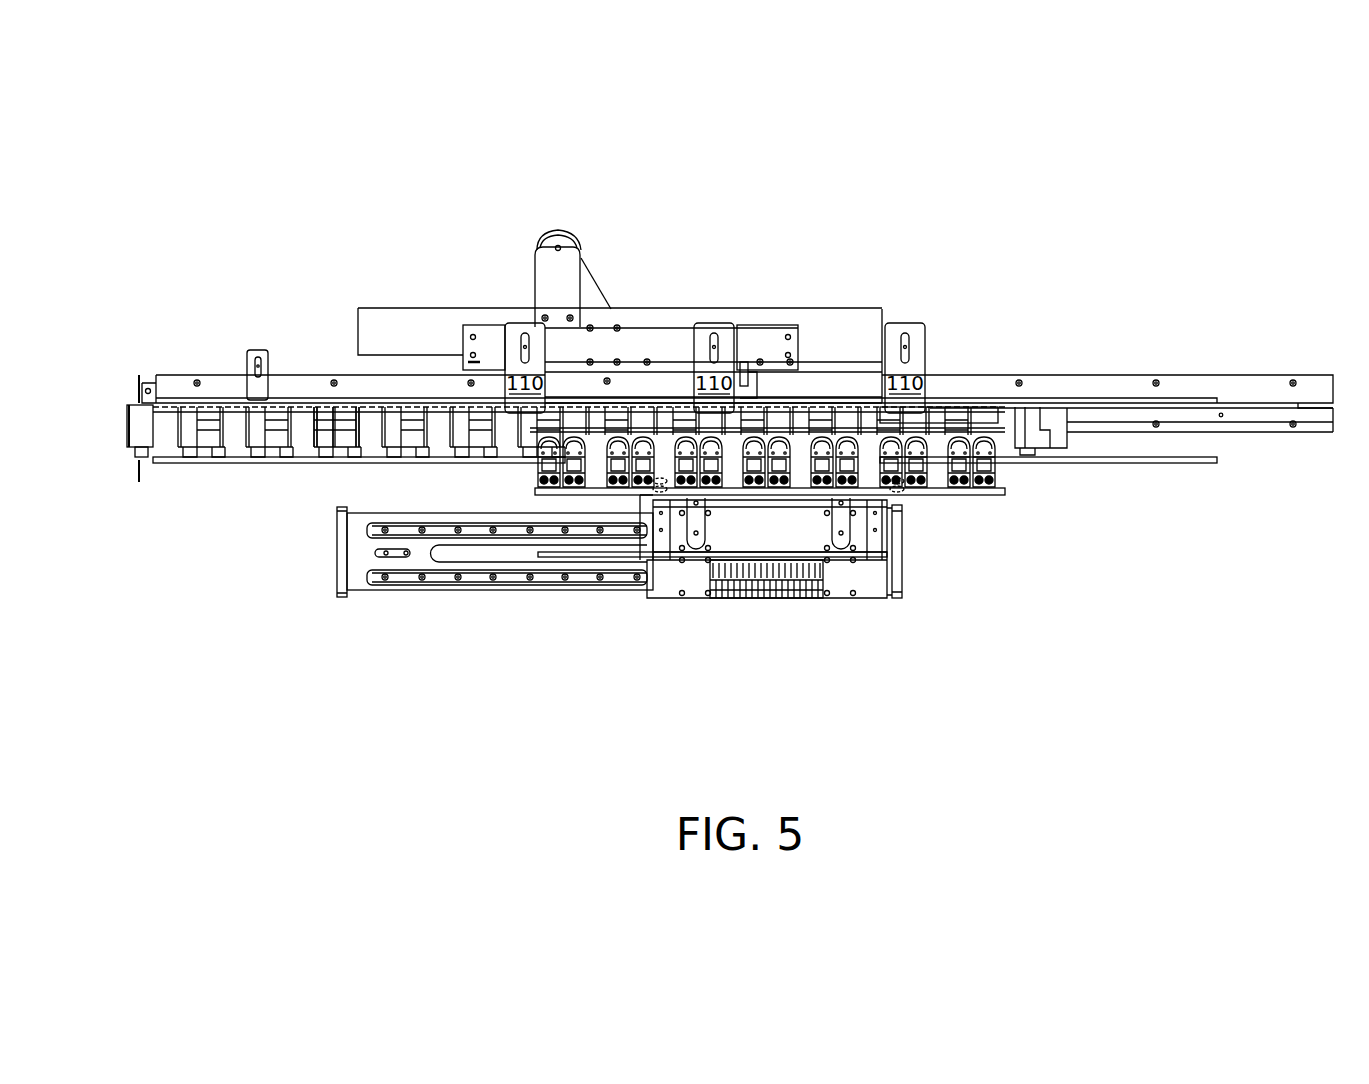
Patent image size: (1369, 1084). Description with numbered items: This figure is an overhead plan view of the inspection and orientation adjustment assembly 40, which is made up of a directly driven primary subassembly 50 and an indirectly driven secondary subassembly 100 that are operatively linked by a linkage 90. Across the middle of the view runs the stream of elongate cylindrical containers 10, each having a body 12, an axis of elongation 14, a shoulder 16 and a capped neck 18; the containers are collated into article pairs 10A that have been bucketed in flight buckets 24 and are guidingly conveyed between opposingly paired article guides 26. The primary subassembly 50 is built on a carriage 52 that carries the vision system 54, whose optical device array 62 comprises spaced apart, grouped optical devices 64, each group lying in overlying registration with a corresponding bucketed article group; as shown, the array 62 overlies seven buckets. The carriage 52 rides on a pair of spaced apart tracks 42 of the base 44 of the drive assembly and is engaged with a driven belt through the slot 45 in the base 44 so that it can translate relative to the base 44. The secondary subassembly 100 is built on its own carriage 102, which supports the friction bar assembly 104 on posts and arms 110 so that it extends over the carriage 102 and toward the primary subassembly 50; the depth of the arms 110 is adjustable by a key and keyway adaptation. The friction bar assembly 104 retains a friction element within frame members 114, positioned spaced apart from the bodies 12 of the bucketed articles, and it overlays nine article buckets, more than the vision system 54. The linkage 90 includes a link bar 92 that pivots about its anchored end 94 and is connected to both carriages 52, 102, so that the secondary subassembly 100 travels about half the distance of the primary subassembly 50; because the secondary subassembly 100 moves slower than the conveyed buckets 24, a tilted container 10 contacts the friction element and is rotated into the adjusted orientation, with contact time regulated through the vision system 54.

The cylindrical container 10 is at (204, 430).
The article pair 10A is at (354, 454).
The body 12 is at (130, 435).
The axis of elongation 14 is at (139, 389).
The shoulder 16 is at (133, 448).
The capped neck 18 is at (138, 458).
The flight bucket 24 is at (330, 438).
The article guide 26 is at (304, 401).
The inspection and orientation adjustment assembly 40 is at (1010, 304).
The track 42 is at (397, 525).
The base 44 is at (358, 565).
The slot 45 is at (478, 568).
The primary subassembly 50 is at (935, 549).
The carriage 52 is at (661, 596).
The vision system 54 is at (1010, 475).
The optical device array 62 is at (993, 504).
The optical device 64 is at (962, 488).
The linkage 90 is at (598, 262).
The link bar 92 is at (596, 300).
The anchored end 94 is at (565, 232).
The secondary subassembly 100 is at (487, 312).
The carriage 102 is at (468, 340).
The friction bar assembly 104 is at (953, 416).
The arm 110 is at (586, 368).
The frame member 114 is at (988, 413).